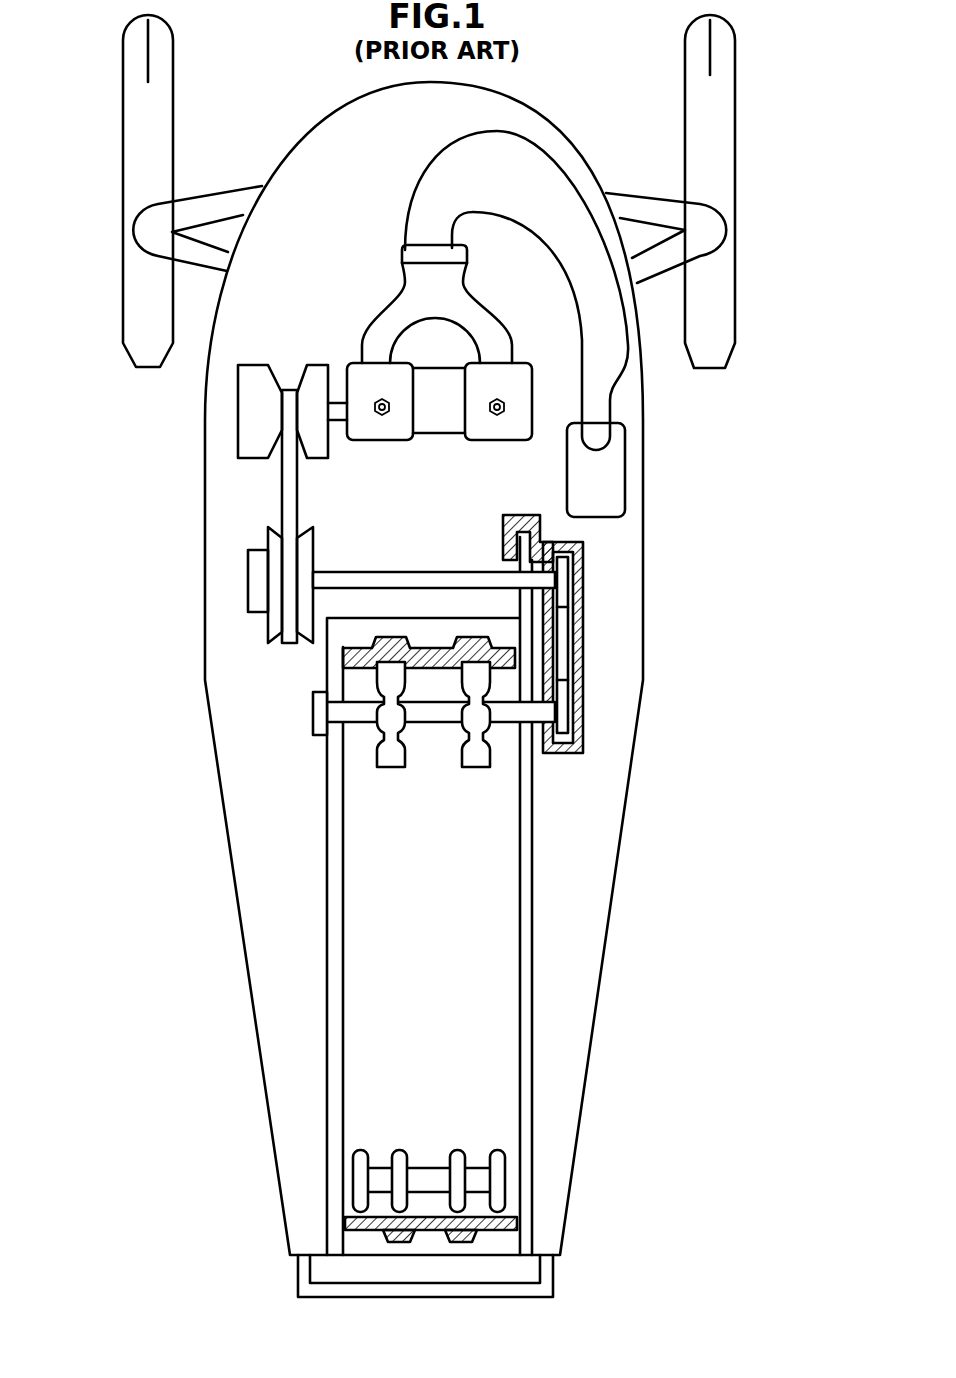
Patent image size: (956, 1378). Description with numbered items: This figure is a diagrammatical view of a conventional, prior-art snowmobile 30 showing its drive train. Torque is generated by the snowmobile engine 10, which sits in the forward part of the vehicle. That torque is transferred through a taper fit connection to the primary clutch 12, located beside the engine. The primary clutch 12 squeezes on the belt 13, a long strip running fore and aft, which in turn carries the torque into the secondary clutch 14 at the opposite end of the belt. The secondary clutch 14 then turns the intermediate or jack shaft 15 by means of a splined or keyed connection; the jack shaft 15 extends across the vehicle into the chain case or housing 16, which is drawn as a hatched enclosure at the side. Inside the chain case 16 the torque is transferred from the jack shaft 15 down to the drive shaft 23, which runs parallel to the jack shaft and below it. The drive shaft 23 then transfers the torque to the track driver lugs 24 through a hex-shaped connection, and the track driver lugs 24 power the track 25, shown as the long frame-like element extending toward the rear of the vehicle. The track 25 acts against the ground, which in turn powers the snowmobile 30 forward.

The snowmobile engine 10 is at (504, 425).
The primary clutch 12 is at (240, 417).
The belt 13 is at (286, 493).
The secondary clutch 14 is at (270, 627).
The jack shaft 15 is at (405, 575).
The chain case 16 is at (596, 606).
The drive shaft 23 is at (495, 725).
The track driver lugs 24 is at (368, 776).
The track 25 is at (527, 937).
The snowmobile 30 is at (135, 491).